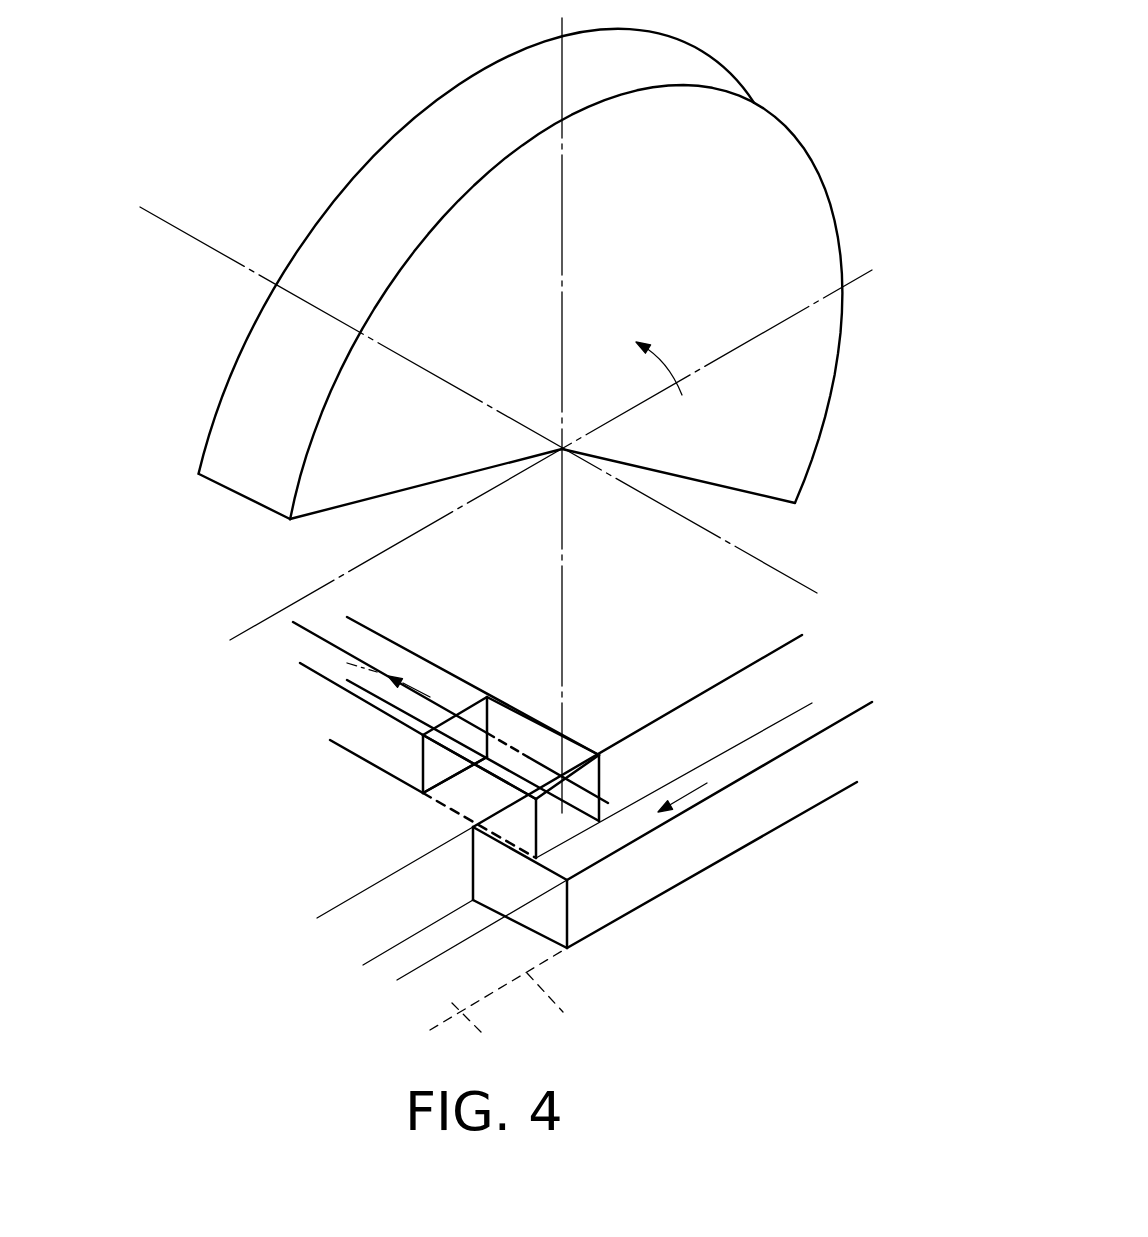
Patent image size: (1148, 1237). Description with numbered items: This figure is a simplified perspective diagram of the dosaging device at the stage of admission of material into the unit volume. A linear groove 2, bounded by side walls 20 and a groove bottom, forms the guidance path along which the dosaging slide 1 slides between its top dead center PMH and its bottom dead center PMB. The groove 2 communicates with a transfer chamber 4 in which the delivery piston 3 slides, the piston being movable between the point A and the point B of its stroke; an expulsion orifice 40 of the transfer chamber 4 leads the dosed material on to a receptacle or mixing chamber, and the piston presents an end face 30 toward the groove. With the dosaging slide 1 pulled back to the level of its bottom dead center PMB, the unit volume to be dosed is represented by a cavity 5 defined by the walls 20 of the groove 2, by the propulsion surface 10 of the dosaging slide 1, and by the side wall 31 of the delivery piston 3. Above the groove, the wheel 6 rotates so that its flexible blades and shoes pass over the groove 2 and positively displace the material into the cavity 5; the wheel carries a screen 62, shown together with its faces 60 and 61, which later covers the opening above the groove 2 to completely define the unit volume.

The dosaging slide 1 is at (335, 717).
The groove 2 is at (516, 735).
The delivery piston 3 is at (631, 819).
The transfer chamber 4 is at (498, 1002).
The cavity 5 is at (590, 752).
The wheel 6 is at (495, 293).
The propulsion surface 10 is at (482, 698).
The side walls 20 is at (492, 790).
The end face 30 is at (557, 930).
The side wall 31 is at (483, 871).
The expulsion orifice 40 is at (373, 975).
The front surface 60 is at (688, 523).
The edge surface 61 is at (318, 507).
The screen 62 is at (463, 100).
The point A of the stroke A is at (556, 1004).
The point B of the stroke B is at (700, 872).
The top dead center PMH is at (602, 752).
The bottom dead center PMB is at (420, 797).